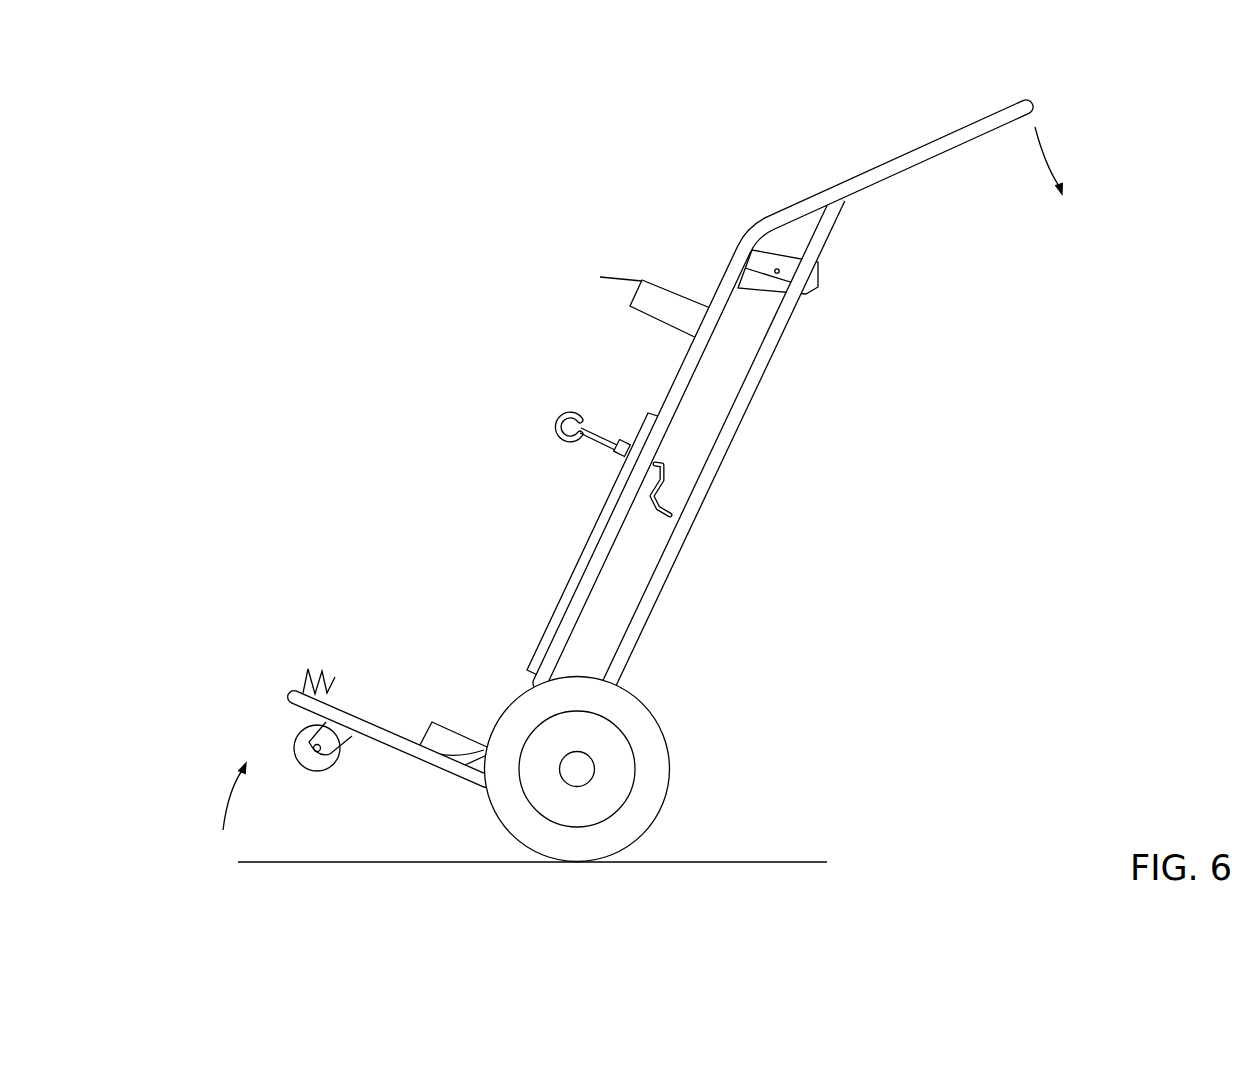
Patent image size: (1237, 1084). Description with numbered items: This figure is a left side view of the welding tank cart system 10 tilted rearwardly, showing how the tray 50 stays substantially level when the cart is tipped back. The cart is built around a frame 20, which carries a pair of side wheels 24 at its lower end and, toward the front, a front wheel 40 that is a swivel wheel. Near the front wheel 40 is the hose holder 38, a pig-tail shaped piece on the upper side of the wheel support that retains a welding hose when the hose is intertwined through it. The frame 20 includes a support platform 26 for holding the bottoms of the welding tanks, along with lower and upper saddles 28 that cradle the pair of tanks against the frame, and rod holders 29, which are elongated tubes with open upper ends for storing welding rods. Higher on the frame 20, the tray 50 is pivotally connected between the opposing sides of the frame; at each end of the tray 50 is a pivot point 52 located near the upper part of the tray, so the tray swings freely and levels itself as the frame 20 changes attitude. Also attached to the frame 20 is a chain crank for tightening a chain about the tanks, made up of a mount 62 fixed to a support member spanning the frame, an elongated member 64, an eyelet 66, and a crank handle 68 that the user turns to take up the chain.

The welding tank cart system 10 is at (1074, 327).
The frame 20 is at (742, 443).
The side wheels 24 is at (672, 767).
The support platform 26 is at (295, 688).
The saddles 28 is at (641, 281).
The rod holders 29 is at (580, 567).
The hose holder 38 is at (307, 670).
The front wheel 40 is at (280, 737).
The tray 50 is at (816, 295).
The pivot point 52 is at (779, 270).
The mount 62 is at (618, 455).
The elongated member 64 is at (600, 440).
The eyelet 66 is at (560, 415).
The crank handle 68 is at (668, 520).